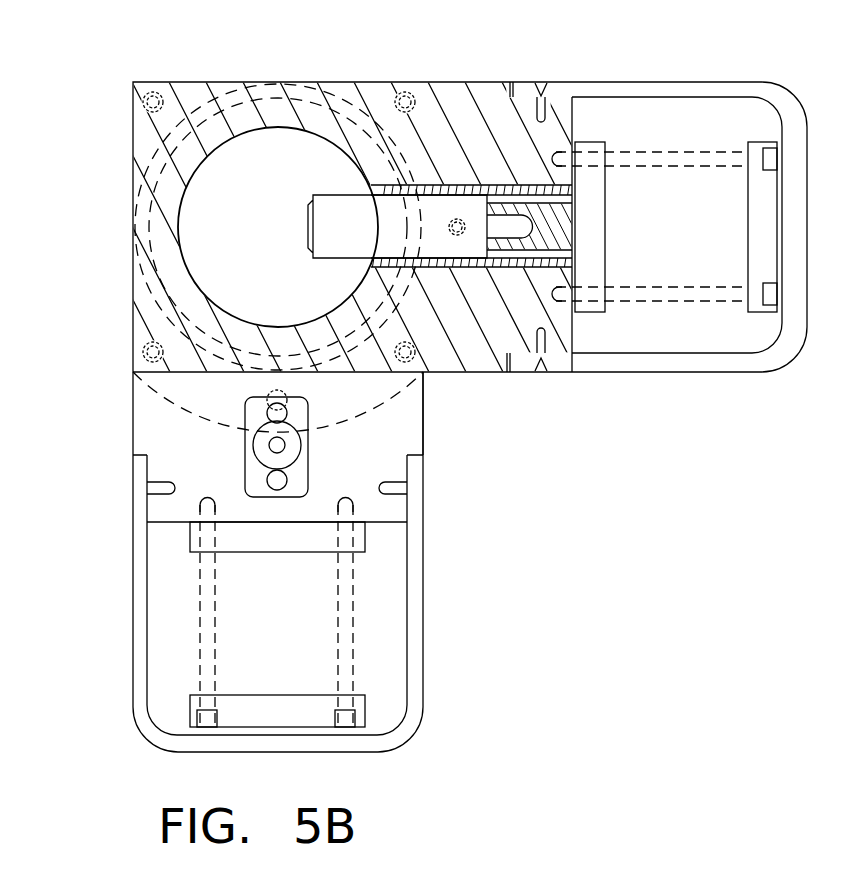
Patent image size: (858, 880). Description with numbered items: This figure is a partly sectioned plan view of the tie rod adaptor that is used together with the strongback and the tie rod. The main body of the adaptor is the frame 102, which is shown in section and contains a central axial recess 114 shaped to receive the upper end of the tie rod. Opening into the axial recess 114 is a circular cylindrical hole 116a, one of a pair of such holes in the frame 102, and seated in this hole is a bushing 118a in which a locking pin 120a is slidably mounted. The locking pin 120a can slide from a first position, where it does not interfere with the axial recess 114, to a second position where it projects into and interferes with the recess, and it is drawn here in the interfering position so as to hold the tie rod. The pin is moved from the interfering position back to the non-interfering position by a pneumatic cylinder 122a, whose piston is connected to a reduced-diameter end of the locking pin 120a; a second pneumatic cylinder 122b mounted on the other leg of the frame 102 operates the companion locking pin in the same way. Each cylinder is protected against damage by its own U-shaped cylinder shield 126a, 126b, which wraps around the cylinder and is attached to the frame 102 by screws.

The frame 102 is at (196, 77).
The axial recess 114 is at (205, 160).
The circular cylindrical hole 116a is at (577, 203).
The bushing 118a is at (553, 189).
The locking pin 120a is at (333, 250).
The pneumatic cylinder 122a is at (638, 312).
The pneumatic cylinder 122b is at (360, 587).
The U-shaped cylinder shield 126a is at (730, 82).
The U-shaped cylinder shield 126b is at (424, 664).